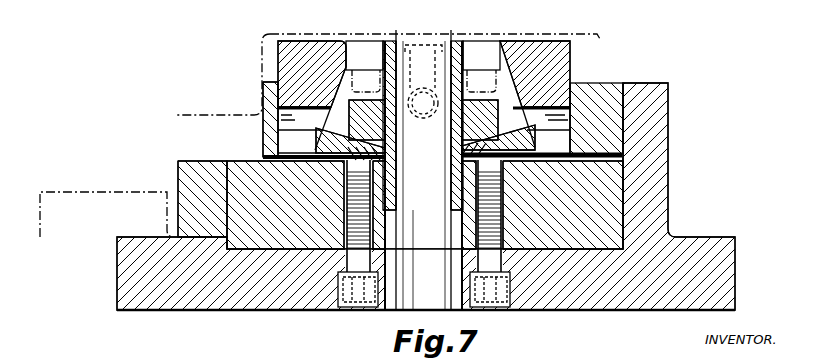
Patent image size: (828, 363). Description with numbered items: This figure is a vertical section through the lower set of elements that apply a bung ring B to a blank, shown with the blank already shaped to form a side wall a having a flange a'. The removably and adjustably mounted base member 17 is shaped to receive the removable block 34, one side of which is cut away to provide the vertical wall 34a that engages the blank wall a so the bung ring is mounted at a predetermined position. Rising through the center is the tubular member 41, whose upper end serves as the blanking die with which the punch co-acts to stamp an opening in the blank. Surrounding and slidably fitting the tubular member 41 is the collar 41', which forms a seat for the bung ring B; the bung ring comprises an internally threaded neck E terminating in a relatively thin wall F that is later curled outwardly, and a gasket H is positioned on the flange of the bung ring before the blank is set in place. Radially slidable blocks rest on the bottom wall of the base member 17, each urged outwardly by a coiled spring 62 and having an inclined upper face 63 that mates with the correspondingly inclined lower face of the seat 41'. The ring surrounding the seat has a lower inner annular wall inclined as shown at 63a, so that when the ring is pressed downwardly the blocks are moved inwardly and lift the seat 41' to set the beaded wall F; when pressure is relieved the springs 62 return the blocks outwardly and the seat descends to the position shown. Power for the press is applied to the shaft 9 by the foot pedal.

The base member 17 is at (199, 303).
The block 34 is at (251, 238).
The vertical wall 34a is at (325, 81).
The tubular member 41 is at (419, 170).
The collar 41' is at (509, 61).
The coiled spring 62 is at (329, 171).
The inclined upper face 63 is at (316, 141).
The inclined lower inner annular wall 63a is at (517, 85).
The shaft 9 is at (690, 74).
The side wall a is at (388, 72).
The flange a' is at (119, 162).
The gasket H is at (367, 120).
The bung ring B is at (480, 120).
The neck E is at (423, 66).
The thin wall F is at (463, 50).